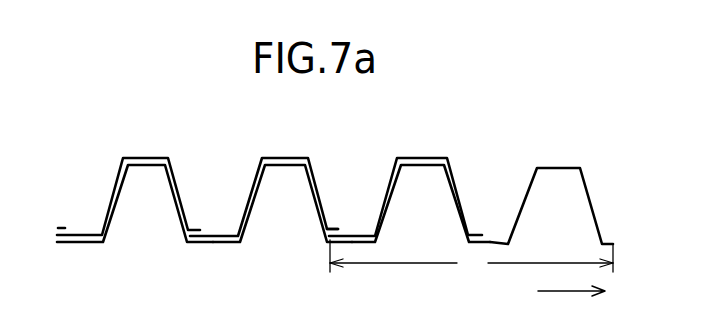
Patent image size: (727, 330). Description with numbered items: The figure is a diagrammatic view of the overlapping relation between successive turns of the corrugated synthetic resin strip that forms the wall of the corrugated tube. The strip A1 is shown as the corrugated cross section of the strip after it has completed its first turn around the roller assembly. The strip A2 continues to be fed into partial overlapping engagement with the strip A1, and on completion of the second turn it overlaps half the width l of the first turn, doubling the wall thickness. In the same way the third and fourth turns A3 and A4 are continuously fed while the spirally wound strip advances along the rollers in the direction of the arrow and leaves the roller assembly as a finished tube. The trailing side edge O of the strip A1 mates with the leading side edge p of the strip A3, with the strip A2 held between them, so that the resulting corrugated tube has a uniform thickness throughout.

The fourth turn of the strip A4 is at (150, 157).
The third turn of the strip A3 is at (298, 158).
The second turn of the strip A2 is at (437, 158).
The first turn of the strip A1 is at (565, 166).
The leading side edge of the strip p is at (336, 228).
The trailing side edge of the strip O is at (327, 242).
The width of the strip turn l is at (471, 261).